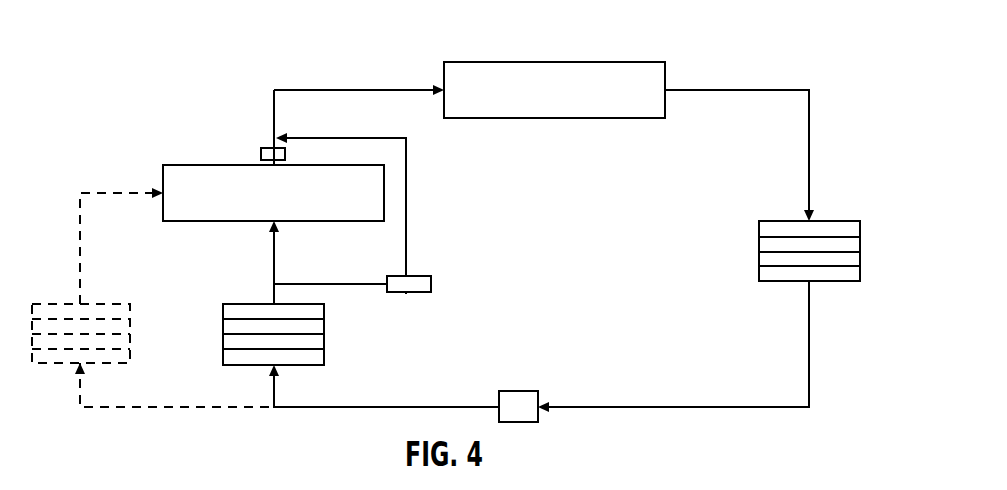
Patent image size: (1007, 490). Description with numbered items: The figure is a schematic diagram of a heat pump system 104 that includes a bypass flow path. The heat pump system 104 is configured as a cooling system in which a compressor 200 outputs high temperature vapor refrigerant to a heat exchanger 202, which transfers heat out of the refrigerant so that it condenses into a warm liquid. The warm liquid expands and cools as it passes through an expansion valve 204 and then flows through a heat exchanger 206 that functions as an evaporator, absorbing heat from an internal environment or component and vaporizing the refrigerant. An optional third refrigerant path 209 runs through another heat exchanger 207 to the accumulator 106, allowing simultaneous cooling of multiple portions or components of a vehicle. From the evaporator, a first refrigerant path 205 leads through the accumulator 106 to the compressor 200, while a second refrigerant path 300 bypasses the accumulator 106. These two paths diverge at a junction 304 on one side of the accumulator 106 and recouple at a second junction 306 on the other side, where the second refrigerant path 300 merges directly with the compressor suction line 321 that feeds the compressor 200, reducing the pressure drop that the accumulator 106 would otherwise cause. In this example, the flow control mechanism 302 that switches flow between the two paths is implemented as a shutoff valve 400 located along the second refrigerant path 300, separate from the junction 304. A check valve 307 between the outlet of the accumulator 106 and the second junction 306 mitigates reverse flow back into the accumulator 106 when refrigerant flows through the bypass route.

The heat pump system 104 is at (132, 27).
The accumulator 106 is at (175, 164).
The compressor 200 is at (492, 62).
The heat exchanger 202 is at (783, 221).
The expansion valve 204 is at (518, 391).
The first refrigerant path 205 is at (277, 256).
The heat exchanger 206 is at (310, 365).
The heat exchanger 207 is at (60, 308).
The third refrigerant path 209 is at (100, 190).
The second refrigerant path 300 is at (406, 212).
The flow control mechanism 302 is at (400, 305).
The junction 304 is at (262, 281).
The second junction 306 is at (261, 130).
The check valve 307 is at (260, 153).
The compressor suction line 321 is at (353, 88).
The shutoff valve 400 is at (433, 284).